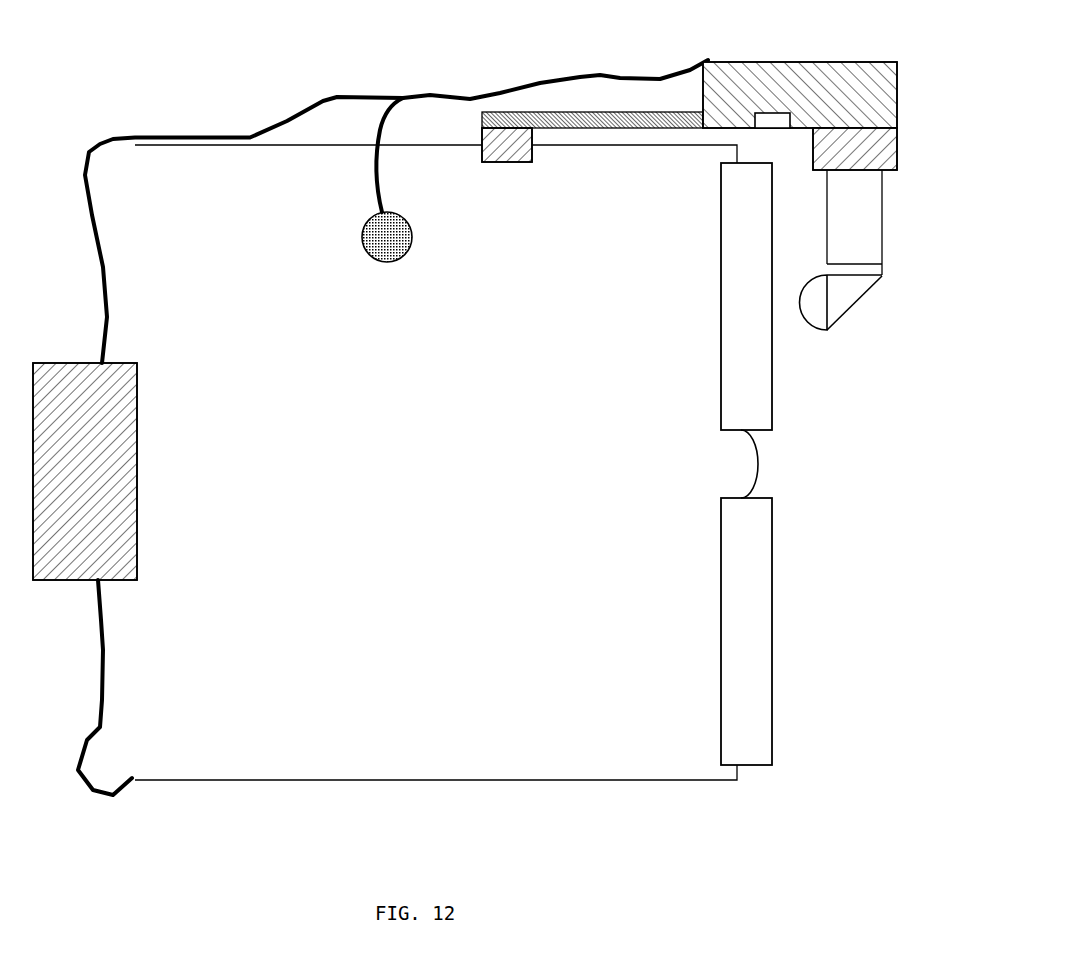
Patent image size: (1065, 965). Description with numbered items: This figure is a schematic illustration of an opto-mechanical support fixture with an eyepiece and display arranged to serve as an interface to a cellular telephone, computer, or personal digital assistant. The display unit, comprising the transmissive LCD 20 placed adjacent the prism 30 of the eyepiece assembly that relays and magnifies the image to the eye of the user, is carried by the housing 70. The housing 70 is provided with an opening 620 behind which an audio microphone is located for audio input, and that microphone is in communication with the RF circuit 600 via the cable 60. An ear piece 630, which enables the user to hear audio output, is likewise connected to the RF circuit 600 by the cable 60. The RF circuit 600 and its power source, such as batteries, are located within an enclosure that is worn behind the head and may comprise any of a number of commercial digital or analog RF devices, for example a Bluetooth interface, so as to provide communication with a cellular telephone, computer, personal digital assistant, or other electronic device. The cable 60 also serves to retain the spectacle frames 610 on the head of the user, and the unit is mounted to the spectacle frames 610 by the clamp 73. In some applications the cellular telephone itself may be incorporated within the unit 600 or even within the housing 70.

The transmissive LCD 20 is at (883, 271).
The prism 30 is at (843, 305).
The cable 60 is at (258, 130).
The housing 70 is at (875, 62).
The clamp 73 is at (515, 162).
The RF circuit 600 is at (117, 463).
The spectacle frames 610 is at (360, 147).
The opening 620 is at (772, 117).
The ear piece 630 is at (377, 242).